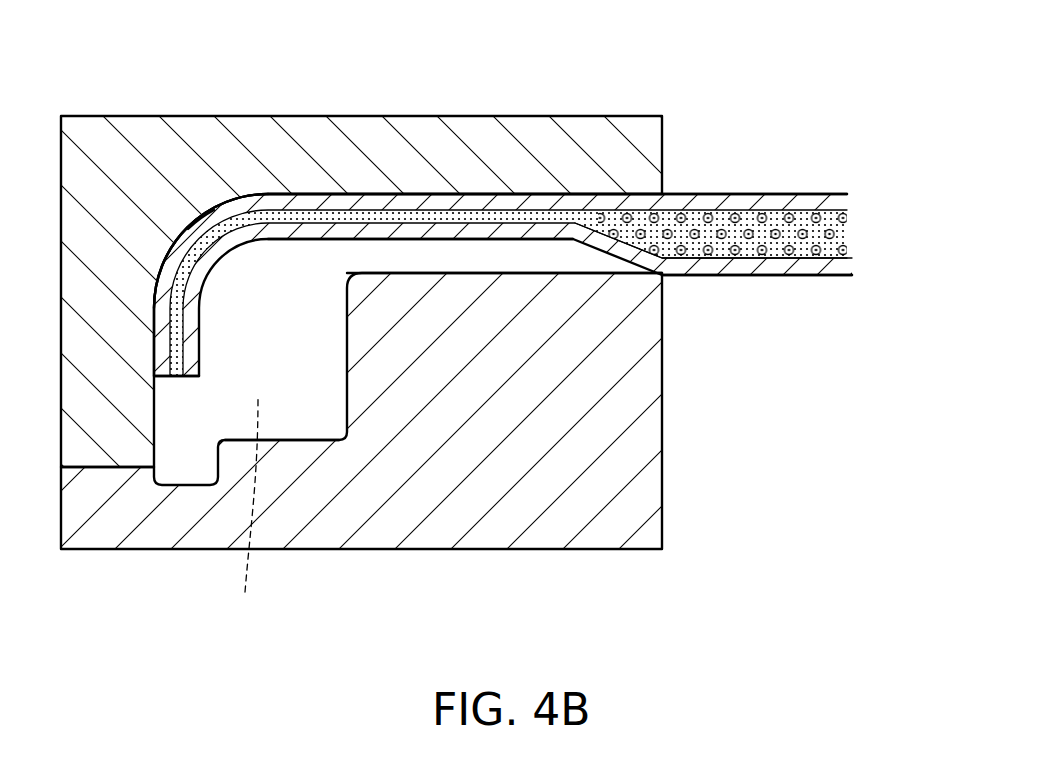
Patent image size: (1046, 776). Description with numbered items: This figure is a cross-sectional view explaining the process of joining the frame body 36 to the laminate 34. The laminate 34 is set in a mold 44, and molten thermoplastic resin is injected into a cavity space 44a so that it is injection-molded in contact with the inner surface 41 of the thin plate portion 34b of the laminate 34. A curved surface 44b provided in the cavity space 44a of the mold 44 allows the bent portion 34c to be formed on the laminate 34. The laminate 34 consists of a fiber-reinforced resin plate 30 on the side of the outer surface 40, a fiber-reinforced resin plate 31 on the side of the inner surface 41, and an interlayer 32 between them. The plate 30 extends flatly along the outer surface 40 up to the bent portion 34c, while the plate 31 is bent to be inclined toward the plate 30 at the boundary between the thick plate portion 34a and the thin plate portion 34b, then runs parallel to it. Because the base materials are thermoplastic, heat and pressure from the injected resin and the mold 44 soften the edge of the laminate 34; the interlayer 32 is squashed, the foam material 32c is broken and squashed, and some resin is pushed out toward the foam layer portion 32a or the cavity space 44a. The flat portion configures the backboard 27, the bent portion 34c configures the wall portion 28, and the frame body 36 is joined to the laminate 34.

The backboard 27 is at (753, 191).
The wall portion 28 is at (170, 380).
The fiber-reinforced resin plate 30 is at (837, 202).
The fiber-reinforced resin plate 31 is at (837, 269).
The interlayer 32 is at (838, 229).
The foam layer portion 32a is at (695, 216).
The foam material 32c is at (652, 234).
The laminate 34 is at (913, 187).
The thick plate portion 34a is at (785, 279).
The thin plate portion 34b is at (360, 192).
The bent portion 34c is at (180, 236).
The frame body 36 is at (233, 618).
The outer surface 40 is at (517, 193).
The inner surface 41 is at (422, 241).
The mold 44 is at (305, 552).
The cavity space 44a is at (297, 440).
The curved surface 44b is at (200, 229).